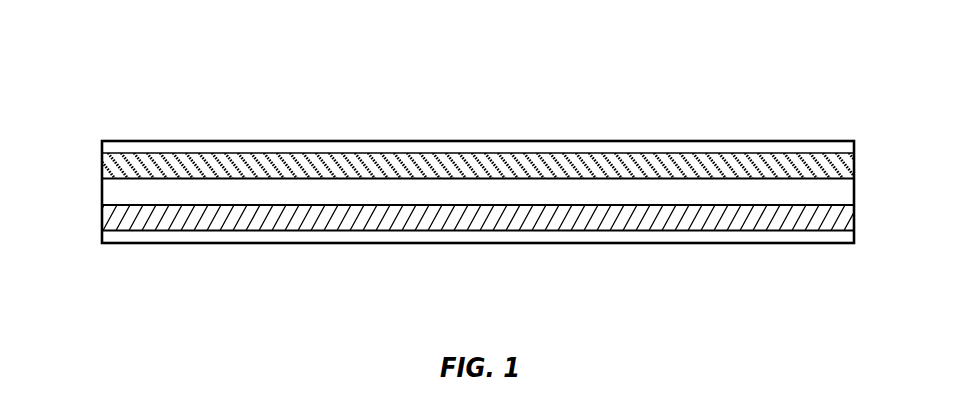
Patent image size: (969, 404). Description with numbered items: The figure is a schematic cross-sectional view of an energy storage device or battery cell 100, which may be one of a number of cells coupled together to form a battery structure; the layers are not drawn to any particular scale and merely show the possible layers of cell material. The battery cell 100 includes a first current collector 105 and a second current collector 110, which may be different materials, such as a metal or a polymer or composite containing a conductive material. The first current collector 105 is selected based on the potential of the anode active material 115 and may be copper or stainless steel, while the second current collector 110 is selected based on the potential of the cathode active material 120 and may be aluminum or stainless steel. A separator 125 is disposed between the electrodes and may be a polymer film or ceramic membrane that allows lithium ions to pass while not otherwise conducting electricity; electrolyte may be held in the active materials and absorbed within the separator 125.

The battery cell 100 is at (479, 164).
The first current collector 105 is at (312, 243).
The second current collector 110 is at (703, 141).
The anode active material 115 is at (102, 213).
The cathode active material 120 is at (856, 162).
The separator 125 is at (856, 197).